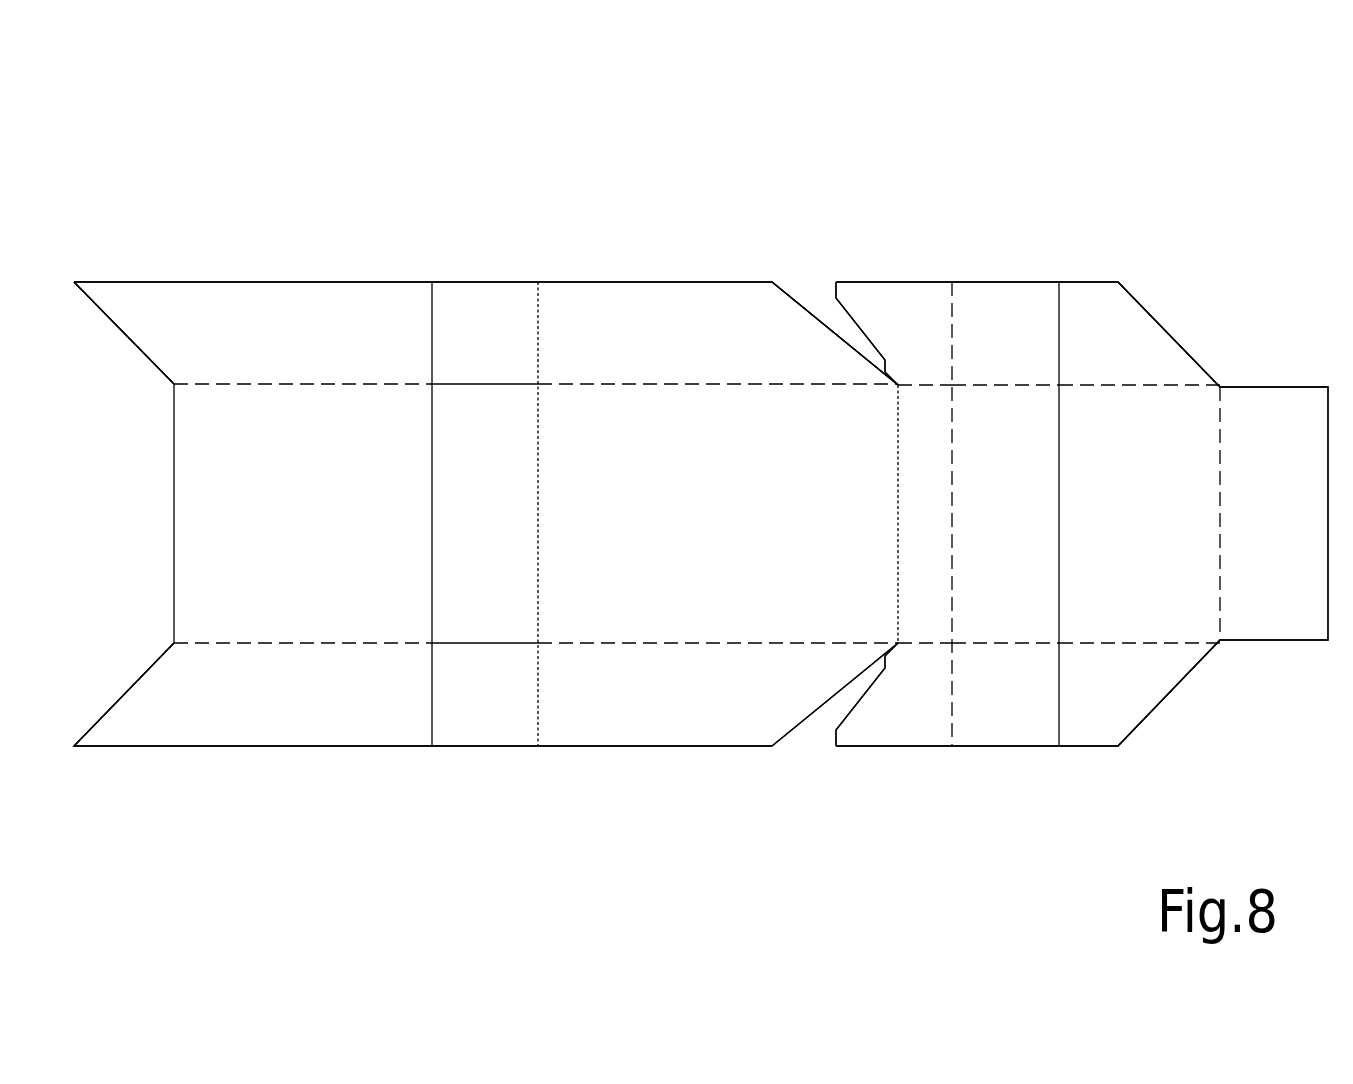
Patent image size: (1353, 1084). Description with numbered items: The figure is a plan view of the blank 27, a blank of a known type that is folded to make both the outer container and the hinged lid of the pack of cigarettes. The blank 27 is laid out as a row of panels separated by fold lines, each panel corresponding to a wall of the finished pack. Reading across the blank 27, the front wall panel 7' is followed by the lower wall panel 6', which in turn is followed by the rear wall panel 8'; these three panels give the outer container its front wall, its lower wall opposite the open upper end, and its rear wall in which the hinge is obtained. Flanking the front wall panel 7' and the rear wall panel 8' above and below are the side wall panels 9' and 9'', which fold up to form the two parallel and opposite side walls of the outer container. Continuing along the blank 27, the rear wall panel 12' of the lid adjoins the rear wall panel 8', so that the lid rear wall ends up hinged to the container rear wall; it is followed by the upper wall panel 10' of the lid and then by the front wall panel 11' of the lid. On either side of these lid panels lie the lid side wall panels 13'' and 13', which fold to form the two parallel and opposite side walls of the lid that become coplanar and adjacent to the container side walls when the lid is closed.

The blank 27 is at (1173, 160).
The front wall panel 7' is at (303, 513).
The lower wall panel 6' is at (485, 514).
The rear wall panel 8' is at (718, 513).
The side wall panel 9' is at (253, 514).
The side wall panel 9'' is at (798, 514).
The rear wall panel of lid 12' is at (925, 514).
The lid side wall panel 13'' is at (885, 514).
The upper wall panel of lid 10' is at (1005, 514).
The front wall panel of lid 11' is at (1139, 514).
The lid side wall panel 13' is at (1154, 514).